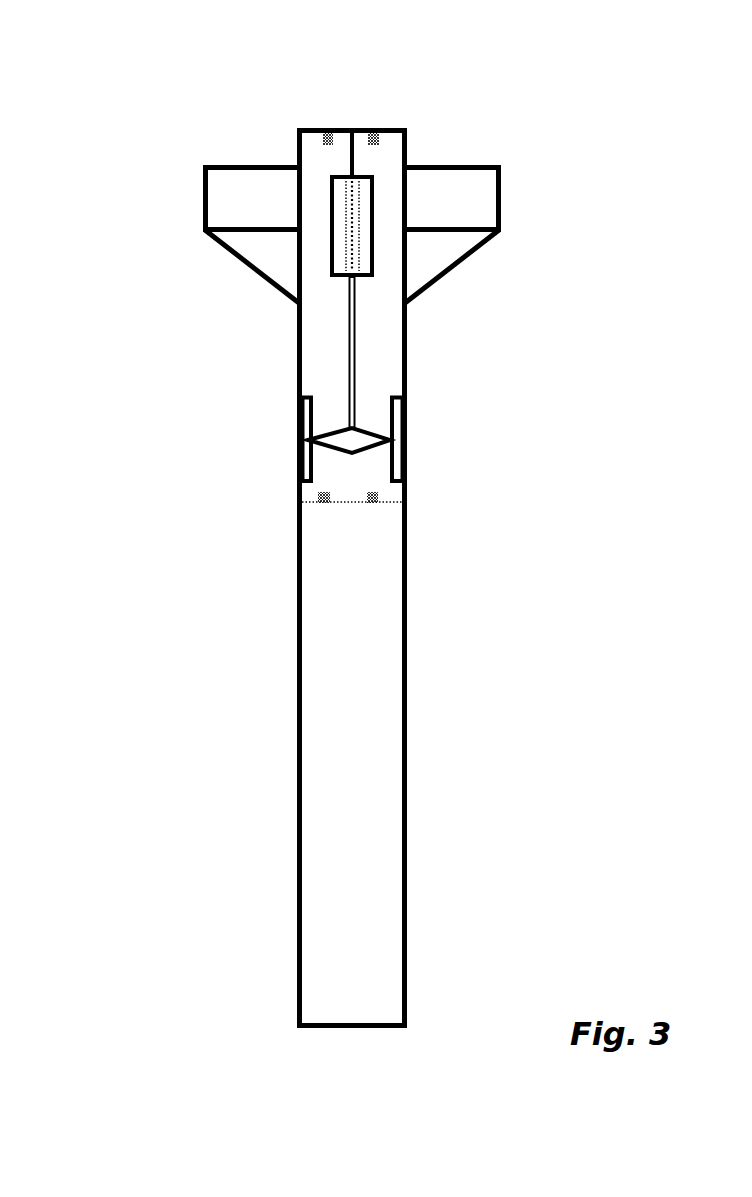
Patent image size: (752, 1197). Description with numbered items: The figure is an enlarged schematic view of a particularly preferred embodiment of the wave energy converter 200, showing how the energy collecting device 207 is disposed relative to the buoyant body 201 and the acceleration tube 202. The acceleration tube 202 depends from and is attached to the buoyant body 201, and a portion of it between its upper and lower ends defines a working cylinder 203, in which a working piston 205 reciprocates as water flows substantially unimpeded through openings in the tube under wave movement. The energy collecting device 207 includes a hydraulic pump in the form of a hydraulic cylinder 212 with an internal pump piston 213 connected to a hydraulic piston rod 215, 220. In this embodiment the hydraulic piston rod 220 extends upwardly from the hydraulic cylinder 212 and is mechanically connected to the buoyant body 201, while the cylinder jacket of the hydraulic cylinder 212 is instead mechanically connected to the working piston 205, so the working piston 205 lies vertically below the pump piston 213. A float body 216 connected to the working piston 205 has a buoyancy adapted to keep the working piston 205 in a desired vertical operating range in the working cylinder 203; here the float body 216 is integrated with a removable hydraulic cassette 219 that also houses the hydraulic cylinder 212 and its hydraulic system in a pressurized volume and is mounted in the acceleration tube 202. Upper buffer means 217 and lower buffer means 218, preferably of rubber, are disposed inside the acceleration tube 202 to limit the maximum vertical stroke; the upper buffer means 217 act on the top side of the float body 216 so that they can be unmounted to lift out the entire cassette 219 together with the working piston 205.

The wave energy converter 200 is at (140, 85).
The buoyant body 201 is at (512, 155).
The acceleration tube 202 is at (430, 728).
The working cylinder 203 is at (390, 486).
The working piston 205 is at (350, 453).
The energy collecting device 207 is at (313, 203).
The hydraulic cylinder 212 is at (365, 196).
The pump piston 213 is at (356, 222).
The hydraulic piston rod 215 is at (357, 342).
The float body 216 is at (373, 242).
The upper buffer means 217 is at (375, 145).
The lower buffer means 218 is at (333, 493).
The removable hydraulic cassette 219 is at (328, 252).
The hydraulic piston rod 220 is at (344, 146).